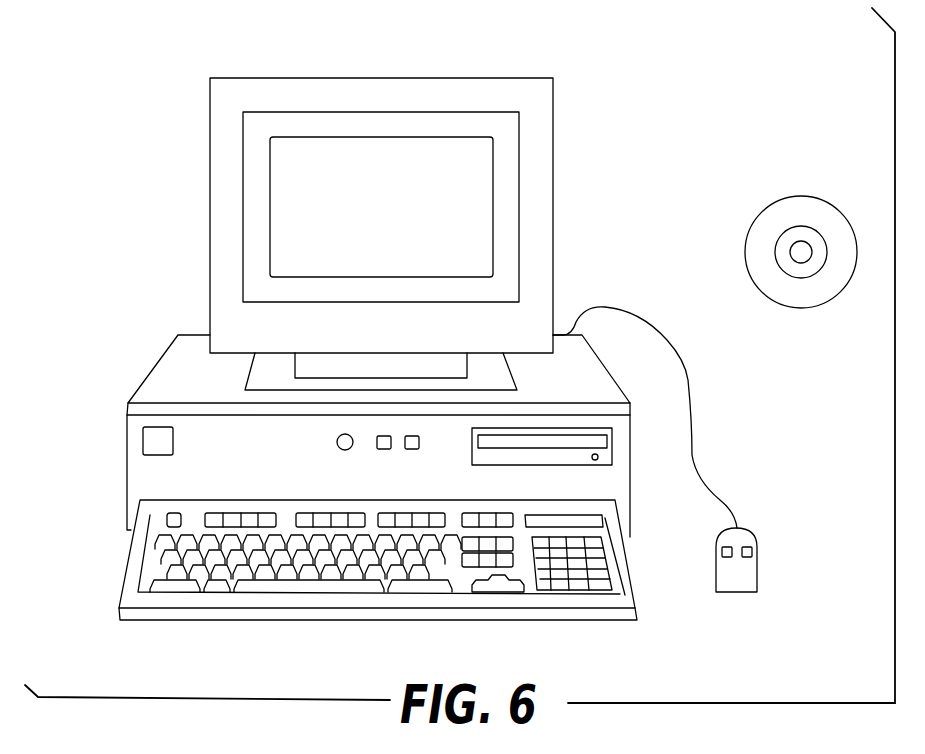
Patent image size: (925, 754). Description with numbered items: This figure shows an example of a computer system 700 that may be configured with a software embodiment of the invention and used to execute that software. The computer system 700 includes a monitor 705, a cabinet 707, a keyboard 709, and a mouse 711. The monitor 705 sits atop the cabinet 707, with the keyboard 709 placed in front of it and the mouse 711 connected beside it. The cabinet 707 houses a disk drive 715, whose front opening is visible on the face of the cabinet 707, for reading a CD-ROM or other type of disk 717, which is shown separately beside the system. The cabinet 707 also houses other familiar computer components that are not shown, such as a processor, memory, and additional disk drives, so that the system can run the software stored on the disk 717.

The computer system 700 is at (621, 101).
The monitor 705 is at (467, 160).
The cabinet 707 is at (148, 373).
The keyboard 709 is at (120, 575).
The mouse 711 is at (757, 573).
The disk drive 715 is at (612, 450).
The disk 717 is at (801, 197).